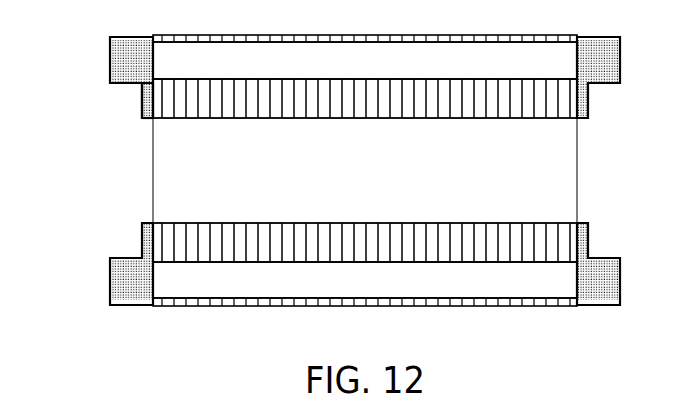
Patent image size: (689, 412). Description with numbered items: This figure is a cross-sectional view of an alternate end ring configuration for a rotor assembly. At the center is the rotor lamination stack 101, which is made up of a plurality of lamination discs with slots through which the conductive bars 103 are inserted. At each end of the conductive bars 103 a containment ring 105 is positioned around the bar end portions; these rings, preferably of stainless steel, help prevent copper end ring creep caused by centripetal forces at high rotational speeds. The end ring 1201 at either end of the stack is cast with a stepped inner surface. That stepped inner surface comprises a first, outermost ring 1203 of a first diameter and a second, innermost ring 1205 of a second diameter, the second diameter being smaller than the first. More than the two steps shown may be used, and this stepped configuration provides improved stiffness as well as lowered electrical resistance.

The rotor lamination stack 101 is at (358, 35).
The conductive bars 103 is at (483, 74).
The containment ring 105 is at (600, 35).
The end ring 1201 is at (118, 60).
The first, outermost ring 1203 is at (131, 90).
The second, innermost ring 1205 is at (147, 126).